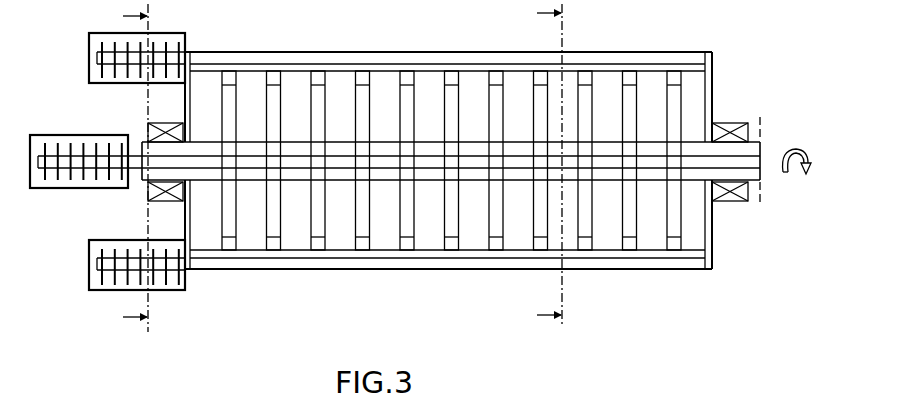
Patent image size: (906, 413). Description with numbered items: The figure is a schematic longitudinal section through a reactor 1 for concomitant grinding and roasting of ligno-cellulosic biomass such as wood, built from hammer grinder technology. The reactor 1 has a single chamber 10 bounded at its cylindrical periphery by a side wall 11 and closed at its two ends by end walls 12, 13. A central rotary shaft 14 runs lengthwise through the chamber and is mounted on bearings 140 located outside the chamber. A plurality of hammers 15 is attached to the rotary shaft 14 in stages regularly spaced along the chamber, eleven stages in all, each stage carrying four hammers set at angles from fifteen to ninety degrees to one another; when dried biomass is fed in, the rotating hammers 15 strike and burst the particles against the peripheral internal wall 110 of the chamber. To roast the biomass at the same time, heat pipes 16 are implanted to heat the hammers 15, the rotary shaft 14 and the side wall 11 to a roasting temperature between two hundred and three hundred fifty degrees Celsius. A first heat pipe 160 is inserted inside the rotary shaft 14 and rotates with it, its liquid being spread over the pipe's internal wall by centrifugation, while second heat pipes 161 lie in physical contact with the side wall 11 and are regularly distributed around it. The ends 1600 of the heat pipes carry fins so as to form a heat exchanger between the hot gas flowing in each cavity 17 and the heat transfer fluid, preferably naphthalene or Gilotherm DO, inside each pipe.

The reactor 1 is at (236, 312).
The single chamber 10 is at (528, 219).
The side wall 11 is at (425, 257).
The end wall 12 is at (716, 87).
The end wall 13 is at (189, 92).
The central rotary shaft 14 is at (690, 150).
The hammers 15 is at (535, 90).
The heat pipes 16 is at (288, 154).
The cavity 17 is at (90, 42).
The peripheral internal wall 110 is at (424, 74).
The bearings 140 is at (160, 202).
The first heat pipe 160 is at (748, 160).
The second heat pipes 161 is at (330, 58).
The ends of the heat pipes 1600 is at (165, 79).